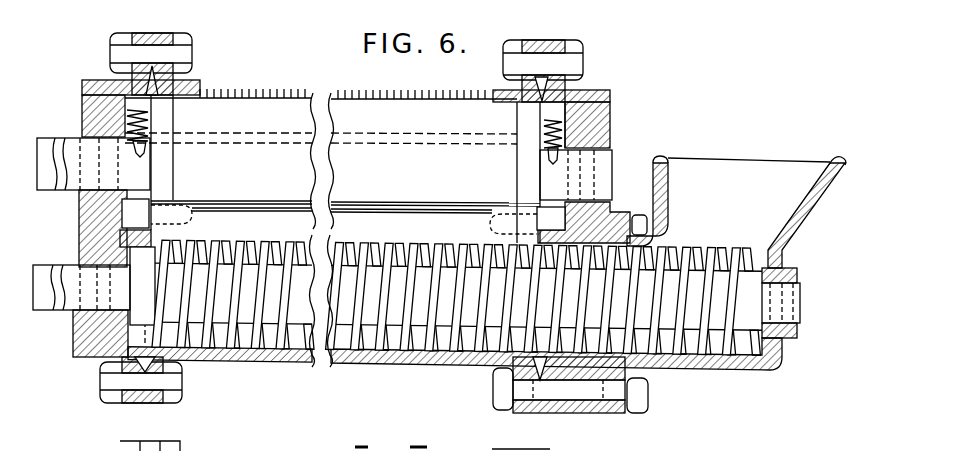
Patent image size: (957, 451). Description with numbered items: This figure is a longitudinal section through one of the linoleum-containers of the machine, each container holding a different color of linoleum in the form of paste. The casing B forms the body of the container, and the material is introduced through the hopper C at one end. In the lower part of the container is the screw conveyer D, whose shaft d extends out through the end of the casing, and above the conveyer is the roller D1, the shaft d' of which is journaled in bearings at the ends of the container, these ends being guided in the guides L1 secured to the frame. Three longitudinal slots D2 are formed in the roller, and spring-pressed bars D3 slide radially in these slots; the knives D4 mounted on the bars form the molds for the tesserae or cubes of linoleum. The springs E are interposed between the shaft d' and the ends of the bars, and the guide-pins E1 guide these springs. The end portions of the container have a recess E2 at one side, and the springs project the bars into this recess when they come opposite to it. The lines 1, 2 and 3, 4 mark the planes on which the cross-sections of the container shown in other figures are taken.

The casing or trough with bolts B is at (435, 213).
The hopper C is at (736, 212).
The screw conveyer D is at (446, 297).
The roller D1 is at (332, 230).
The longitudinal slots D2 is at (322, 115).
The spring-pressed bars D3 is at (231, 112).
The knives D4 is at (424, 98).
The springs E is at (126, 116).
The guide-pins E1 is at (615, 160).
The recess E2 is at (384, 217).
The shaft d is at (428, 323).
The shaft d' is at (373, 165).
The guides L1 is at (615, 116).
The section line 1 is at (516, 102).
The section line 2 is at (510, 343).
The section line 3 is at (277, 388).
The section line 4 is at (317, 380).